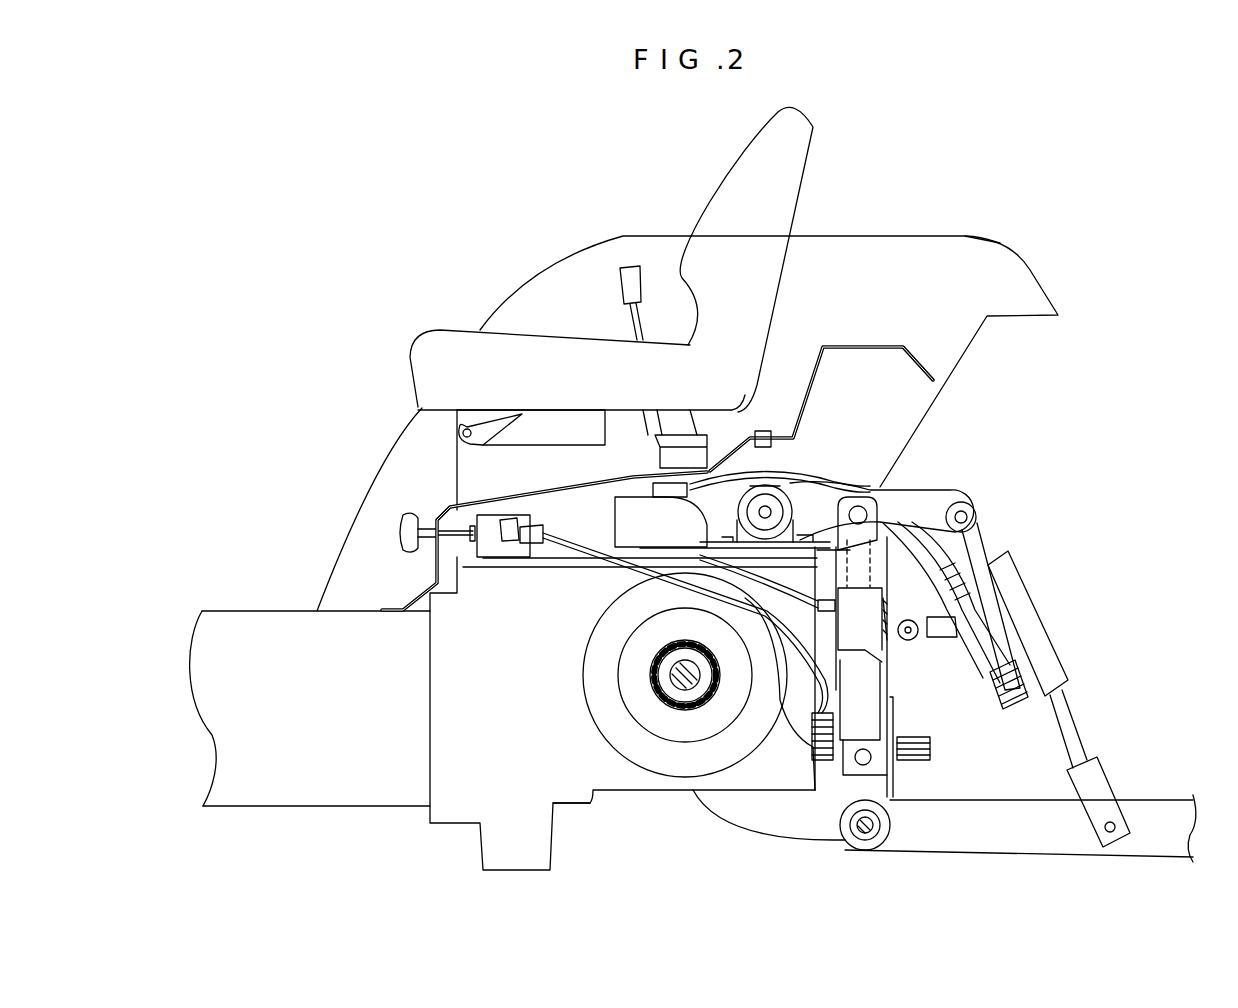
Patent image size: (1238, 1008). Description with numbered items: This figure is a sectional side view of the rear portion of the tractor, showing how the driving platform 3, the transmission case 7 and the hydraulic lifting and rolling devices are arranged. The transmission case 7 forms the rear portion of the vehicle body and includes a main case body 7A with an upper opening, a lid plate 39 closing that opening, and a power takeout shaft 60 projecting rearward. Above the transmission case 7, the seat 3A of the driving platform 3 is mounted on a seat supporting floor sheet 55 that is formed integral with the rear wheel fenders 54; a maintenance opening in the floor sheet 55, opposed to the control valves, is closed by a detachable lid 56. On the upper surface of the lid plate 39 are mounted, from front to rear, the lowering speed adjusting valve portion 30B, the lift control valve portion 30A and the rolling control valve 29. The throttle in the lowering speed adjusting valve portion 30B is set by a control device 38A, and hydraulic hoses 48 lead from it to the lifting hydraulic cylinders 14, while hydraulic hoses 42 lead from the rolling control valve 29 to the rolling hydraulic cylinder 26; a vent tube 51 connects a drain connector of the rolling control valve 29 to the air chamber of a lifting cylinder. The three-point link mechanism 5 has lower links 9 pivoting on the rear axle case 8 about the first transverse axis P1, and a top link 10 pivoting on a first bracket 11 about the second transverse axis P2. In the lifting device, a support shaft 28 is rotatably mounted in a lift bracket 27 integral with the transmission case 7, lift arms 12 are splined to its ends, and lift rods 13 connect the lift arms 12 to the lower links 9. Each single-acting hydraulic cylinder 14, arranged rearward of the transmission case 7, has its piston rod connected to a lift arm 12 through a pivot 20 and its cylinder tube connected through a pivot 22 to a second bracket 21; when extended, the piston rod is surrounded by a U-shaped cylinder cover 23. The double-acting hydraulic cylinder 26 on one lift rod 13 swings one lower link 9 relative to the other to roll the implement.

The driving platform 3 is at (609, 208).
The seat 3A is at (453, 343).
The rear wheel fenders 54 is at (917, 240).
The seat supporting floor sheet 55 is at (858, 336).
The transmission case 7 is at (440, 833).
The main case body 7A is at (600, 777).
The rear axle case 8 is at (767, 817).
The lower links 9 is at (973, 837).
The first transverse axis P1 is at (865, 835).
The control device 38A is at (400, 533).
The lid 56 is at (487, 493).
The lid plate 39 is at (473, 565).
The lift control valve portion 30A is at (563, 510).
The lowering speed adjusting valve portion 30B is at (503, 547).
The hydraulic hoses 48 is at (573, 550).
The rolling control valve 29 is at (620, 505).
The vent tube 51 is at (673, 553).
The hydraulic hoses 42 is at (737, 477).
The lift bracket 27 is at (768, 510).
The support shaft 28 is at (783, 483).
The pivot 20 is at (858, 506).
The hydraulic cylinders 14 is at (877, 682).
The cylinder cover 23 is at (885, 604).
The lift arms 12 is at (917, 503).
The three-point link mechanism 5 is at (993, 508).
The first bracket 11 is at (985, 590).
The hydraulic cylinder 26 is at (1030, 612).
The lift rods 13 is at (1063, 717).
The top link 10 is at (957, 642).
The second transverse axis P2 is at (912, 640).
The power takeout shaft 60 is at (933, 757).
The second bracket 21 is at (887, 777).
The pivot 22 is at (860, 765).